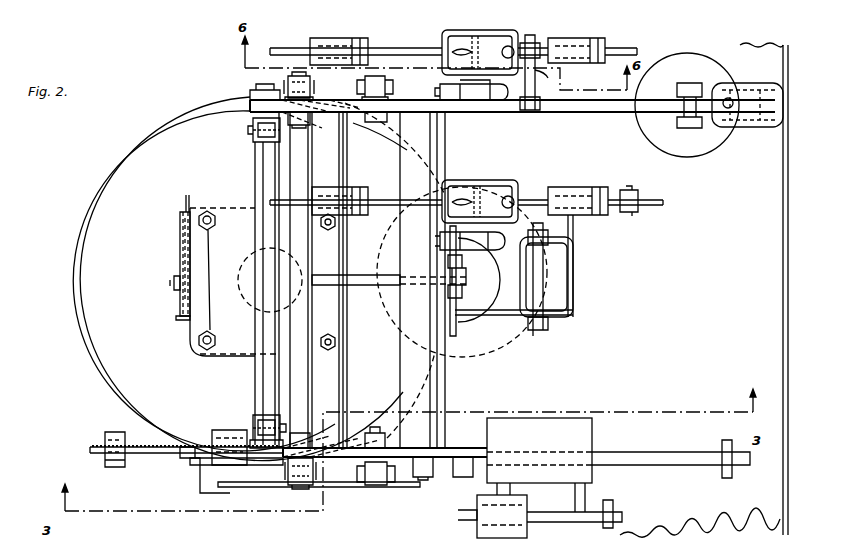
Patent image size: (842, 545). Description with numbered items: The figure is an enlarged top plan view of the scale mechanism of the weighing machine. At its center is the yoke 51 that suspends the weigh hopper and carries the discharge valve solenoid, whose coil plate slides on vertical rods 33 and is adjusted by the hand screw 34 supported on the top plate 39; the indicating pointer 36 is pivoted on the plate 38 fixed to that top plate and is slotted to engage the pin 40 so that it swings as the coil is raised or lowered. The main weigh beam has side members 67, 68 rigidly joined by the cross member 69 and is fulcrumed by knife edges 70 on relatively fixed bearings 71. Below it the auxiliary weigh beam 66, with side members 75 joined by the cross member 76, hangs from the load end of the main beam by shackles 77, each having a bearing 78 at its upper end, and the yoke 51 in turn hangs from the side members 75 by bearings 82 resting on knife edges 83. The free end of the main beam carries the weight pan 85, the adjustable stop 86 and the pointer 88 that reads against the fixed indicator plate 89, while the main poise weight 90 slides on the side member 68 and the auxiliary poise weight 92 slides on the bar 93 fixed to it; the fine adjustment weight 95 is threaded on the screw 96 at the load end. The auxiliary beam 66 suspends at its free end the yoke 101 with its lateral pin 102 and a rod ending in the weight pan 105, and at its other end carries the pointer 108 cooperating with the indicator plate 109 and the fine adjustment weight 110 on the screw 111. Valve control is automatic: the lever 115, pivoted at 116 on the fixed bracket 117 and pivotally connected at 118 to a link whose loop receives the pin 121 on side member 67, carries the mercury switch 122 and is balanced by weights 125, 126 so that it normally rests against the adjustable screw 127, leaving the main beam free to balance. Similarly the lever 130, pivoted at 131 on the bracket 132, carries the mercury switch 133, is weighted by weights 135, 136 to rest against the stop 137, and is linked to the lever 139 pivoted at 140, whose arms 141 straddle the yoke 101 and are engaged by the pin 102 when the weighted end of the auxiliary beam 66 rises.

The vertical rods 33 is at (235, 282).
The hand screw 34 is at (248, 302).
The indicating arm or pointer 36 is at (180, 232).
The plate 38 is at (186, 197).
The top plate 39 is at (198, 330).
The pin 40 is at (176, 318).
The yoke 51 is at (262, 376).
The auxiliary weigh beam 66 is at (372, 282).
The side member 67 is at (598, 112).
The side member 68 is at (630, 458).
The cross member 69 is at (446, 397).
The knife edges 70 is at (380, 76).
The bearings 71 is at (394, 86).
The side members 75 is at (250, 102).
The cross member 76 is at (348, 382).
The shackles 77 is at (312, 88).
The bearing 78 is at (288, 92).
The bearings 82 is at (250, 136).
The knife edges 83 is at (258, 148).
The weight pan 85 is at (694, 157).
The adjustable stop 86 is at (732, 100).
The pointer 88 is at (738, 128).
The indicator plate 89 is at (770, 128).
The main poise weight 90 is at (592, 426).
The auxiliary poise weight 92 is at (528, 530).
The bar 93 is at (590, 512).
The fine adjustment weight 95 is at (218, 430).
The screw 96 is at (198, 446).
The yoke 101 is at (462, 280).
The pin 102 is at (462, 325).
The weight pan 105 is at (496, 310).
The pointer 108 is at (222, 498).
The indicator plate 109 is at (244, 488).
The fine adjustment weight 110 is at (110, 432).
The screw 111 is at (135, 455).
The lever 115 is at (386, 48).
The pivot 116 is at (474, 30).
The bracket 117 is at (452, 46).
The pivotal connection 118 is at (554, 77).
The pin 121 is at (568, 90).
The mercury switch 122 is at (480, 102).
The weight 125 is at (344, 33).
The weight 126 is at (592, 42).
The adjustable screw or stop 127 is at (532, 35).
The lever 130 is at (388, 206).
The pivot 131 is at (494, 180).
The bracket 132 is at (466, 180).
The mercury switch 133 is at (472, 250).
The weight 135 is at (360, 187).
The weight 136 is at (588, 218).
The adjustable stop 137 is at (528, 188).
The lever 139 is at (640, 208).
The pivot 140 is at (538, 336).
The arms 141 is at (520, 248).